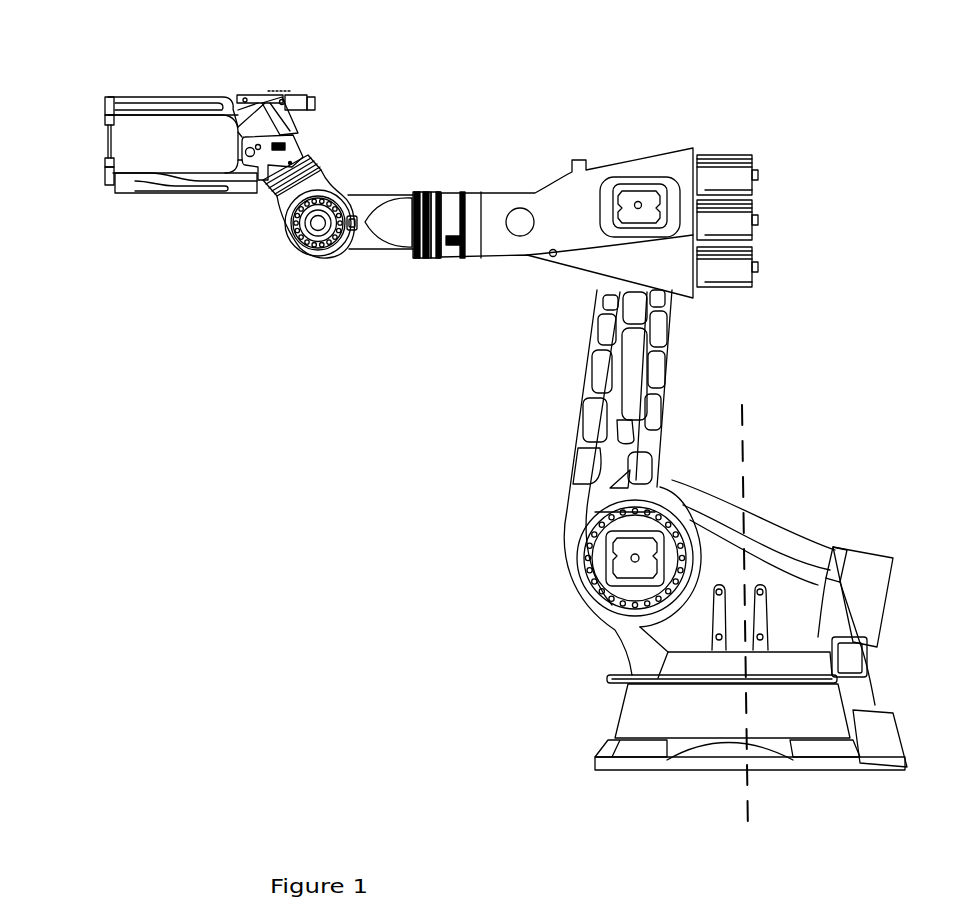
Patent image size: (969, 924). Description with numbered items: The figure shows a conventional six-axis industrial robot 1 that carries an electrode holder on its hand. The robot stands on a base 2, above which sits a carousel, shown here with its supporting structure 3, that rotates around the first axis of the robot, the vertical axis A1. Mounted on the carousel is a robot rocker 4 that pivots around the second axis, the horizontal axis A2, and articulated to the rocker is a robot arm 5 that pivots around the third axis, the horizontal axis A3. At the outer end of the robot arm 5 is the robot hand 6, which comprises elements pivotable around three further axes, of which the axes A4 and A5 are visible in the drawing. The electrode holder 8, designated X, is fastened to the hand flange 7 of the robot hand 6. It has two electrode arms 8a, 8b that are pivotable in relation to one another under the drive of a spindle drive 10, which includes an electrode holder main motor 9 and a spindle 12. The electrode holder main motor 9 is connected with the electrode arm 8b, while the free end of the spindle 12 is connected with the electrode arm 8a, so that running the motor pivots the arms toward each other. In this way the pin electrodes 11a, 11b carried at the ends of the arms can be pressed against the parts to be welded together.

The industrial robot 1 is at (550, 768).
The base 2 is at (640, 725).
The pedestal / base body 3 is at (665, 627).
The robot rocker 4 is at (600, 427).
The robot arm 5 is at (500, 205).
The robot hand 6 is at (372, 242).
The hand flange 7 is at (312, 158).
The electrode holder 8 is at (108, 192).
The electrode arm 8a is at (145, 97).
The electrode arm 8b is at (165, 183).
The electrode holder main motor 9 is at (298, 97).
The spindle drive 10 is at (275, 84).
The pin electrode 11a is at (99, 132).
The pin electrode 11b is at (100, 164).
The spindle 12 is at (266, 96).
The vertical axis A1 is at (752, 420).
The horizontal axis A2 is at (635, 558).
The horizontal axis A3 is at (638, 205).
The hand axis A4 is at (273, 213).
The hand axis A5 is at (318, 224).